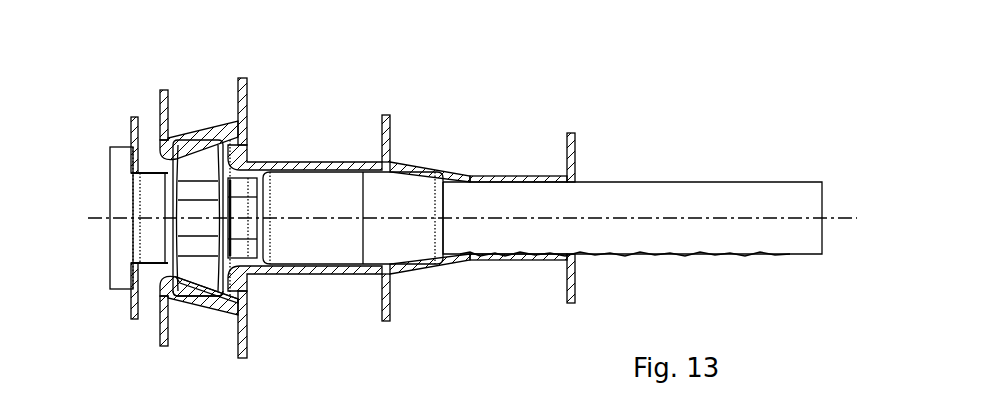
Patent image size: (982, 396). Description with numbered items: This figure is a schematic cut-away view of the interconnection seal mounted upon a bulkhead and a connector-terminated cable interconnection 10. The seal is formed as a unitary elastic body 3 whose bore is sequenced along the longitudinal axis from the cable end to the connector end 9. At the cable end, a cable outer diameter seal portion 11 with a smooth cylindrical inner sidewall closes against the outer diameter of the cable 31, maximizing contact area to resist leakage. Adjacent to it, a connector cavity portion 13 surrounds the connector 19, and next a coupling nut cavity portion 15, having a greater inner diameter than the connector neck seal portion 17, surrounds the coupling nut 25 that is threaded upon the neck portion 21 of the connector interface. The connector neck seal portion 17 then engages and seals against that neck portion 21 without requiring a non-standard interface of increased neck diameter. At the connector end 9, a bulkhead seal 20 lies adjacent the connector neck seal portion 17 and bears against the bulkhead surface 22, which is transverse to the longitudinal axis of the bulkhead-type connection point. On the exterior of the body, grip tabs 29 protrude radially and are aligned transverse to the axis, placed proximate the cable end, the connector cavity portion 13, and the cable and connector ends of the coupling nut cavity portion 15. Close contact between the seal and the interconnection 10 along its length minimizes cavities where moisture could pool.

The unitary elastic body 3 is at (417, 272).
The connector end 9 is at (88, 215).
The interconnection 10 is at (185, 212).
The cable outer diameter seal portion 11 is at (498, 178).
The connector cavity portion 13 is at (313, 160).
The coupling nut cavity portion 15 is at (210, 308).
The connector neck seal portion 17 is at (152, 164).
The connector 19 is at (292, 223).
The bulkhead seal 20 is at (135, 277).
The neck portion 21 is at (153, 232).
The bulkhead surface 22 is at (130, 162).
The coupling nut 25 is at (197, 280).
The grip tabs 29 is at (165, 97).
The cable 31 is at (625, 213).